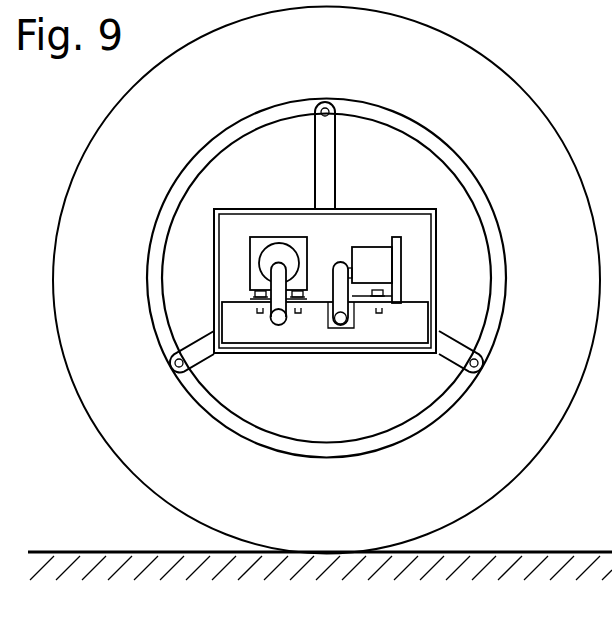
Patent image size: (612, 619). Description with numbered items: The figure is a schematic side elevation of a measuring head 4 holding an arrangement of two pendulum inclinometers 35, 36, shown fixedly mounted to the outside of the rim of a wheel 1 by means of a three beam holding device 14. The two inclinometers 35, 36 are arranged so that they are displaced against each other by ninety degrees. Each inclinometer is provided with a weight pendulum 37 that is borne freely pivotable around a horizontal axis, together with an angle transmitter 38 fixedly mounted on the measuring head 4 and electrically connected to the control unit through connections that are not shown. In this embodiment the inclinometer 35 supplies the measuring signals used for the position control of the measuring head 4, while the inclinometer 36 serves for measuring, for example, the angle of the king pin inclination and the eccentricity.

The wheel 1 is at (518, 442).
The measuring head 4 is at (448, 292).
The three beam holding device 14 is at (468, 344).
The inclinometer 35 is at (254, 268).
The inclinometer 36 is at (399, 252).
The weight pendulum 37 is at (340, 326).
The motors 38 is at (273, 258).